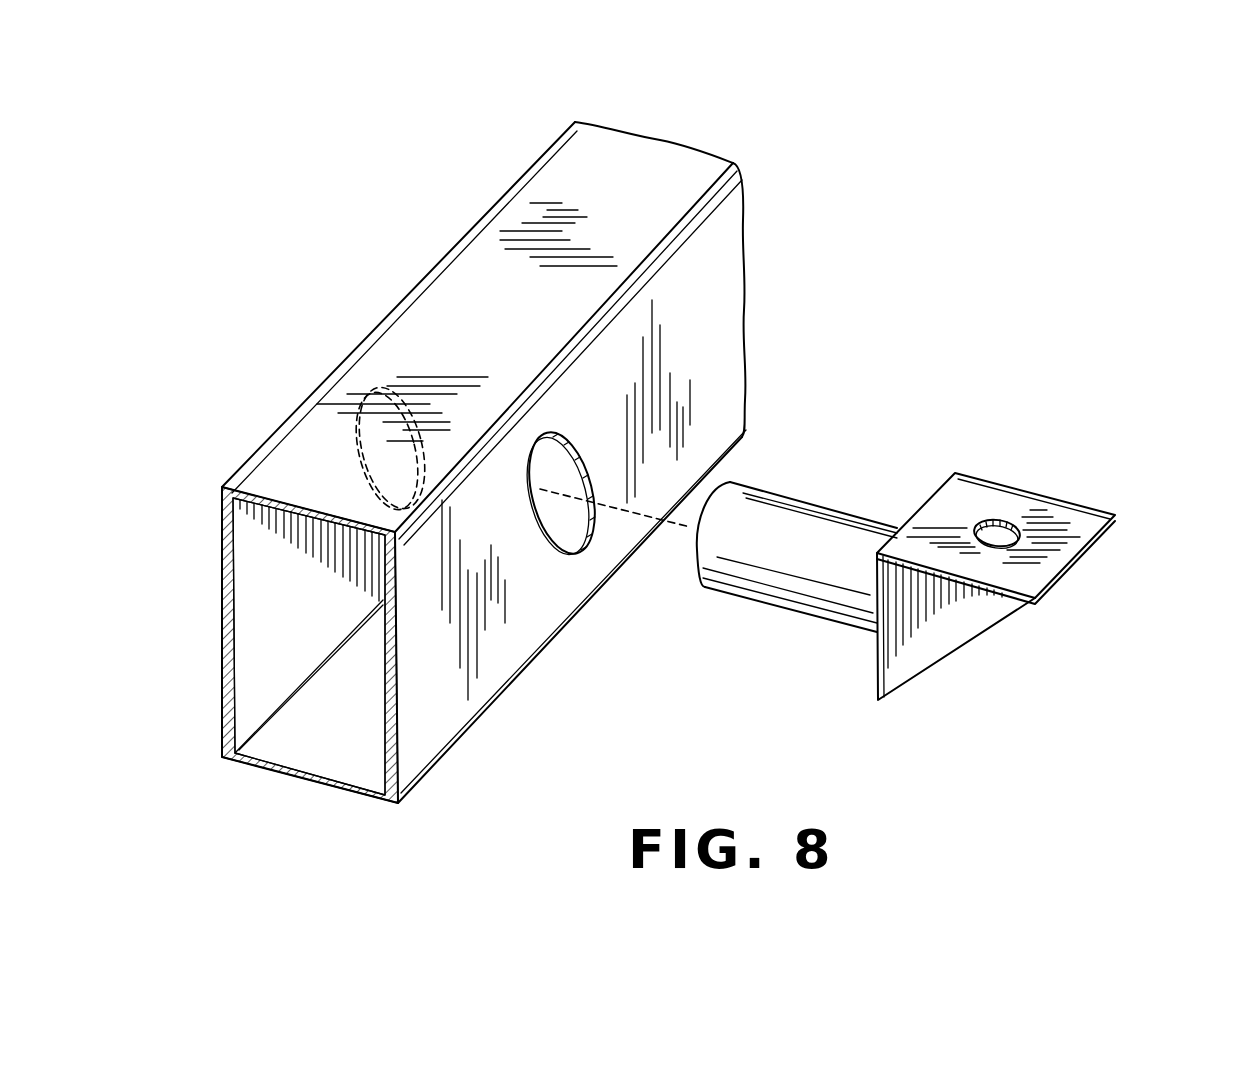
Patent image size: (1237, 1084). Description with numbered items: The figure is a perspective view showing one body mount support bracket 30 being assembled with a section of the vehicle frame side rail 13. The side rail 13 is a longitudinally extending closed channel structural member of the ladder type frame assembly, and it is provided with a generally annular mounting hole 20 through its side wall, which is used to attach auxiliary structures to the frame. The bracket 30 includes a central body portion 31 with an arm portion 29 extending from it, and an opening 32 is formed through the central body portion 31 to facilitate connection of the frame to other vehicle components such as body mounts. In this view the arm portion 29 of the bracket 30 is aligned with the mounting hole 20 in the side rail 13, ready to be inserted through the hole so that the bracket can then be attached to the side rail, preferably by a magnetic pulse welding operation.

The side rail 13 is at (441, 695).
The mounting hole 20 is at (378, 437).
The arm portion 29 is at (788, 515).
The body mount support bracket 30 is at (1078, 588).
The central body portion 31 is at (935, 643).
The opening 32 is at (997, 522).